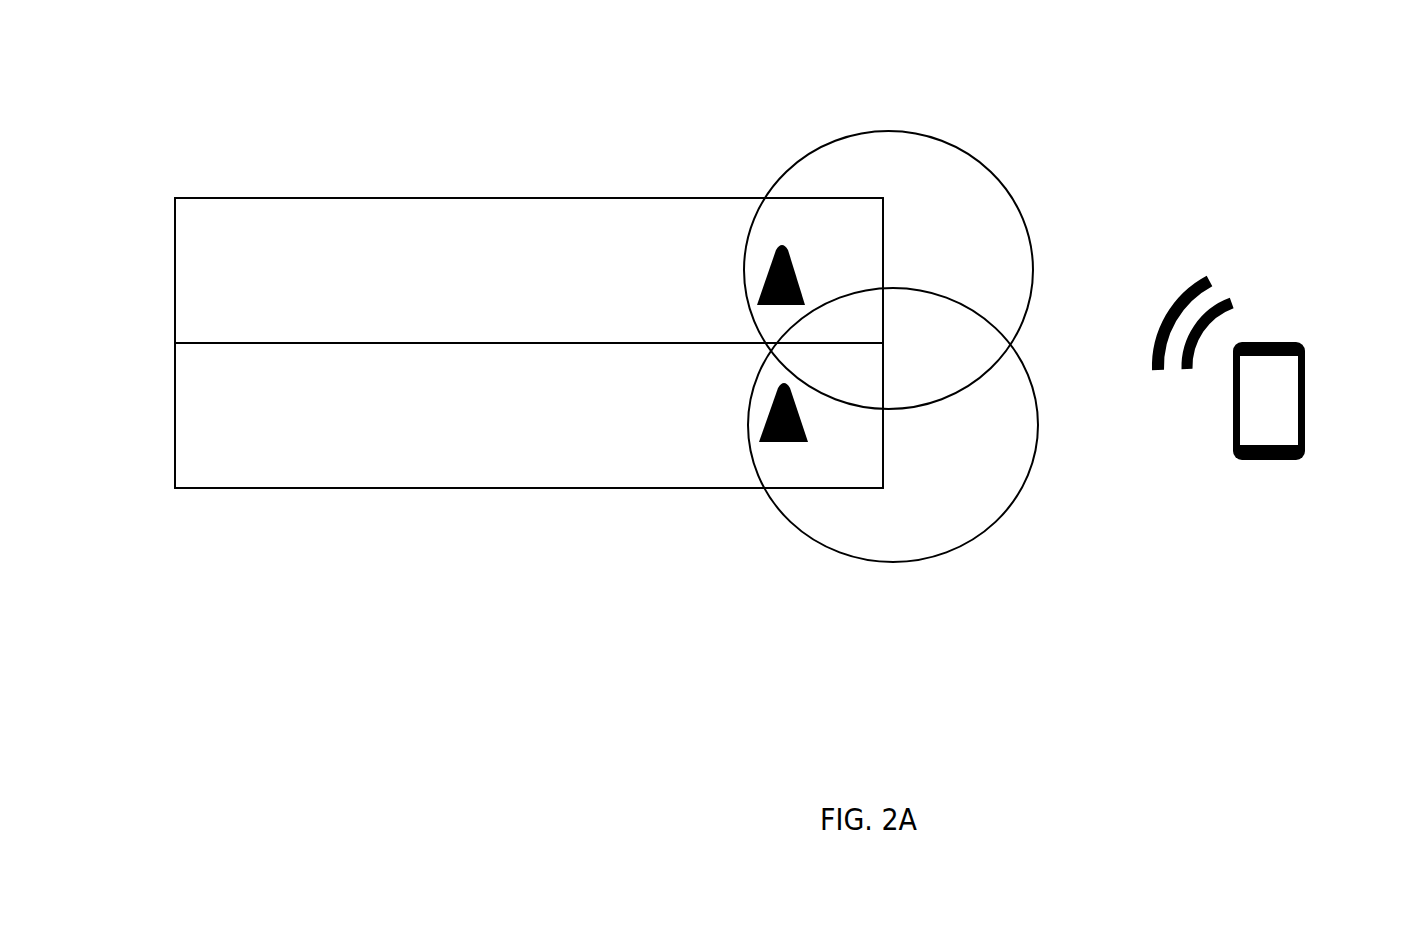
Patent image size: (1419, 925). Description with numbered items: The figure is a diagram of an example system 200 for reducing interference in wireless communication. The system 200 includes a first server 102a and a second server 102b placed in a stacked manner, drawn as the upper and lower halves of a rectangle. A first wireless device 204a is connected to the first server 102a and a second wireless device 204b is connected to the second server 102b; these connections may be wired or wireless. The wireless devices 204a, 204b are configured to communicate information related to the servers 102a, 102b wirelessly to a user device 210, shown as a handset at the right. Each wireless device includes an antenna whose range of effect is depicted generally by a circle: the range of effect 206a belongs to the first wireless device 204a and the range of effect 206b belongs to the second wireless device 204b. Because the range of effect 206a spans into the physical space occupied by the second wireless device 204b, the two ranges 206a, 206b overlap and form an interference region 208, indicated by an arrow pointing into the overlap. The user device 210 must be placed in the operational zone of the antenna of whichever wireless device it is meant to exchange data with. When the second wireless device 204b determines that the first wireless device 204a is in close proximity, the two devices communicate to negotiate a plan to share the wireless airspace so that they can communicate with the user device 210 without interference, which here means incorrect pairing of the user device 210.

The system 200 is at (417, 76).
The first server 102a is at (175, 271).
The second server 102b is at (175, 403).
The first wireless device 204a is at (758, 275).
The second wireless device 204b is at (760, 412).
The range of effect 206a is at (990, 177).
The range of effect 206b is at (995, 523).
The interference region 208 is at (972, 343).
The user device 210 is at (1307, 400).